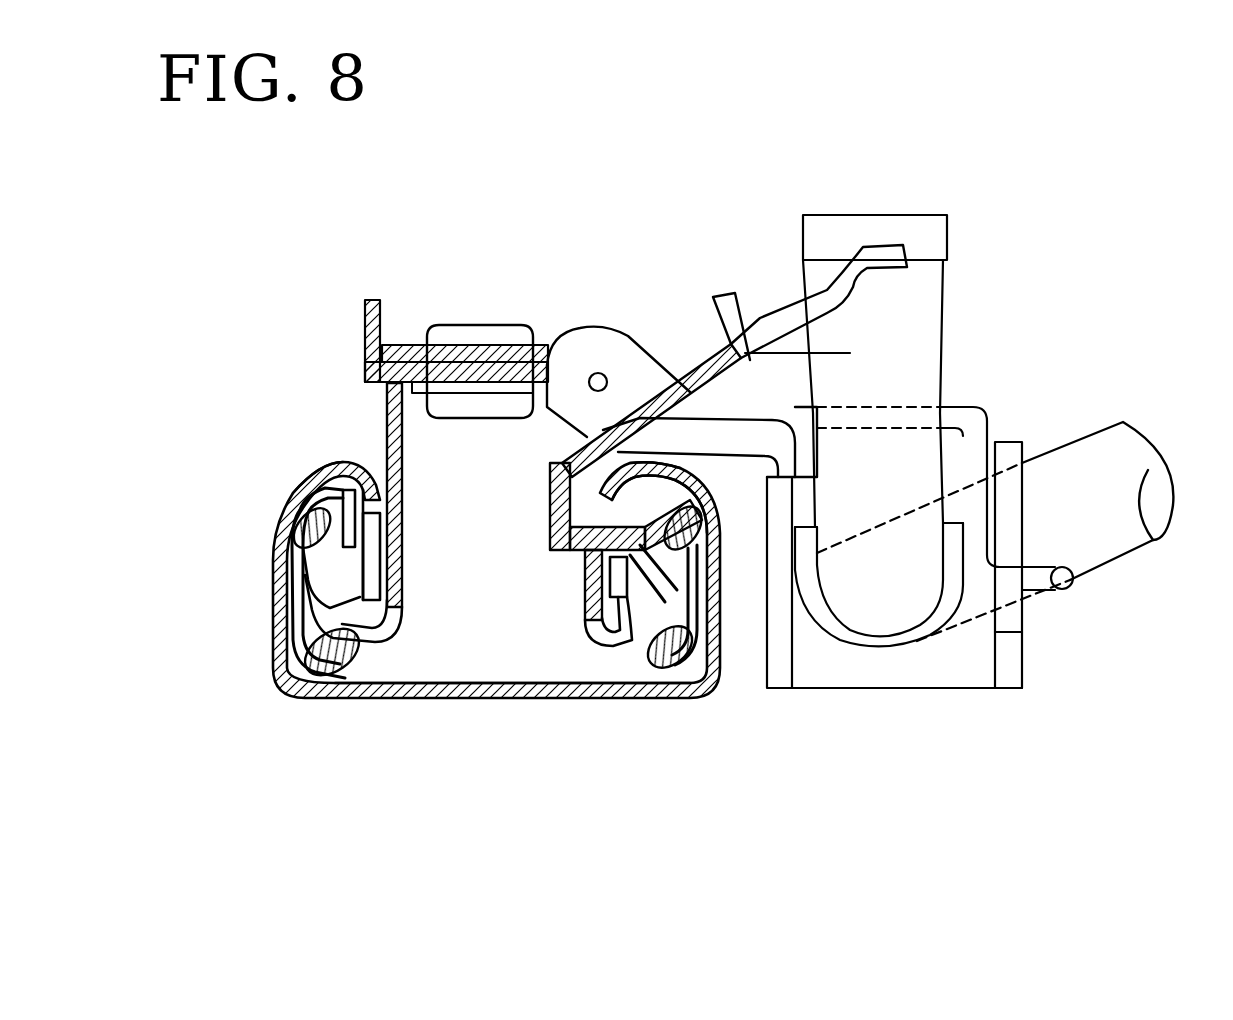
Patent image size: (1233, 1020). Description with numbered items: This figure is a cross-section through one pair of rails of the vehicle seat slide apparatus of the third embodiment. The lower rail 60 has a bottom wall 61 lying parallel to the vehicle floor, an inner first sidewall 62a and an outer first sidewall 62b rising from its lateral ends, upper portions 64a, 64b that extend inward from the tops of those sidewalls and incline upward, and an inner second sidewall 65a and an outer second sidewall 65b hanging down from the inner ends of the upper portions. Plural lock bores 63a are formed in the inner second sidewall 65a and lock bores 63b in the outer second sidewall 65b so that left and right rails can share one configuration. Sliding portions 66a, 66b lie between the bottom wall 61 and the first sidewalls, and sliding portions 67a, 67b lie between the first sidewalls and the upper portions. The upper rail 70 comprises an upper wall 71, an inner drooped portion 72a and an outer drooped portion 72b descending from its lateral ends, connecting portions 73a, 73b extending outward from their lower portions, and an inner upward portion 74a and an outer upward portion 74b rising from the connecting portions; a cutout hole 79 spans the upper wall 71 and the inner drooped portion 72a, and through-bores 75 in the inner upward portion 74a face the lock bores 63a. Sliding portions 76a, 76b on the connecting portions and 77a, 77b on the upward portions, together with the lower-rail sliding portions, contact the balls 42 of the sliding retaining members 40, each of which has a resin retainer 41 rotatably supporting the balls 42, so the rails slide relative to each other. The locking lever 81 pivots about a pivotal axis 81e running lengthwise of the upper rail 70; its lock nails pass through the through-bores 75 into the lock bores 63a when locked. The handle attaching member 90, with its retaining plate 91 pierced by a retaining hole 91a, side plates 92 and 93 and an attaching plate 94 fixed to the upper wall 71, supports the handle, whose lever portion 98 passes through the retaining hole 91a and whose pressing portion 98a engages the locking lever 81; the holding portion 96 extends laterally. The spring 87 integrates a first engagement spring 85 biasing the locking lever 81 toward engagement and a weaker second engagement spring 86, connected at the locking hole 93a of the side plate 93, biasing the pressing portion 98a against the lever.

The sliding retaining member 40 is at (298, 603).
The retainer 41 is at (313, 677).
The ball 42 is at (337, 680).
The lower rail 60 is at (443, 773).
The bottom wall 61 is at (490, 690).
The inner first sidewall 62a is at (713, 650).
The outer first sidewall 62b is at (283, 621).
The lock bore 63a is at (622, 558).
The lock bore 63b is at (373, 556).
The upper portion 64a is at (680, 483).
The upper portion 64b is at (313, 487).
The inner second sidewall 65a is at (617, 490).
The outer second sidewall 65b is at (373, 498).
The sliding portion 66a is at (690, 683).
The sliding portion 66b is at (293, 670).
The sliding portion 67a is at (757, 640).
The sliding portion 67b is at (300, 505).
The upper rail 70 is at (297, 313).
The upper wall 71 is at (422, 360).
The inner drooped portion 72a is at (593, 607).
The outer drooped portion 72b is at (403, 603).
The connecting portion 73a is at (597, 628).
The connecting portion 73b is at (385, 630).
The inner upward portion 74a is at (617, 572).
The outer upward portion 74b is at (347, 527).
The through-bore 75 is at (600, 520).
The sliding portion 76a is at (615, 670).
The sliding portion 76b is at (365, 650).
The sliding portion 77a is at (742, 655).
The sliding portion 77b is at (292, 533).
The cutout hole 79 is at (537, 393).
The locking lever 81 is at (780, 315).
The pivotal axis 81e is at (598, 371).
The first engagement spring 85 is at (850, 353).
The second engagement spring 86 is at (977, 410).
The spring 87 is at (1047, 337).
The handle attaching member 90 is at (1028, 715).
The retaining plate 91 is at (957, 673).
The retaining hole 91a is at (832, 640).
The side plate 92 is at (787, 652).
The side plate 93 is at (1017, 668).
The locking hole 93a is at (1013, 630).
The attaching plate 94 is at (737, 428).
The holding portion 96 is at (1137, 378).
The lever portion 98 is at (927, 305).
The pressing portion 98a is at (870, 223).